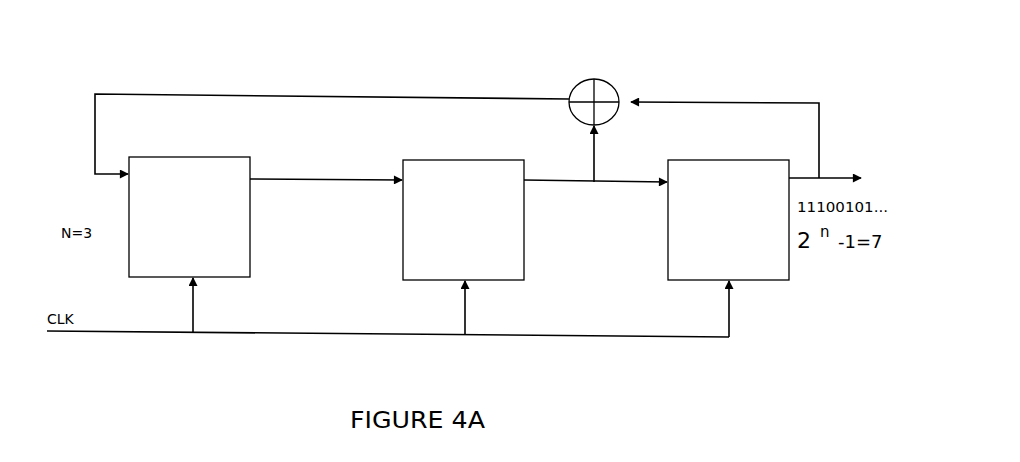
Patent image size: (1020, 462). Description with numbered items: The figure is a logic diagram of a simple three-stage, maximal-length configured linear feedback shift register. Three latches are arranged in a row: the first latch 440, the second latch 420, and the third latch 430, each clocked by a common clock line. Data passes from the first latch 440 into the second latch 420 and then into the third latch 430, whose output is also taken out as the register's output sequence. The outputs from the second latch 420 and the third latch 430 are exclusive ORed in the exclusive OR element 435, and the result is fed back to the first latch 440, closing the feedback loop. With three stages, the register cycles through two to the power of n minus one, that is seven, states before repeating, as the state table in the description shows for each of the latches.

The latch 440 is at (190, 157).
The latch 420 is at (457, 160).
The latch 430 is at (723, 160).
The exclusive OR 435 is at (595, 72).